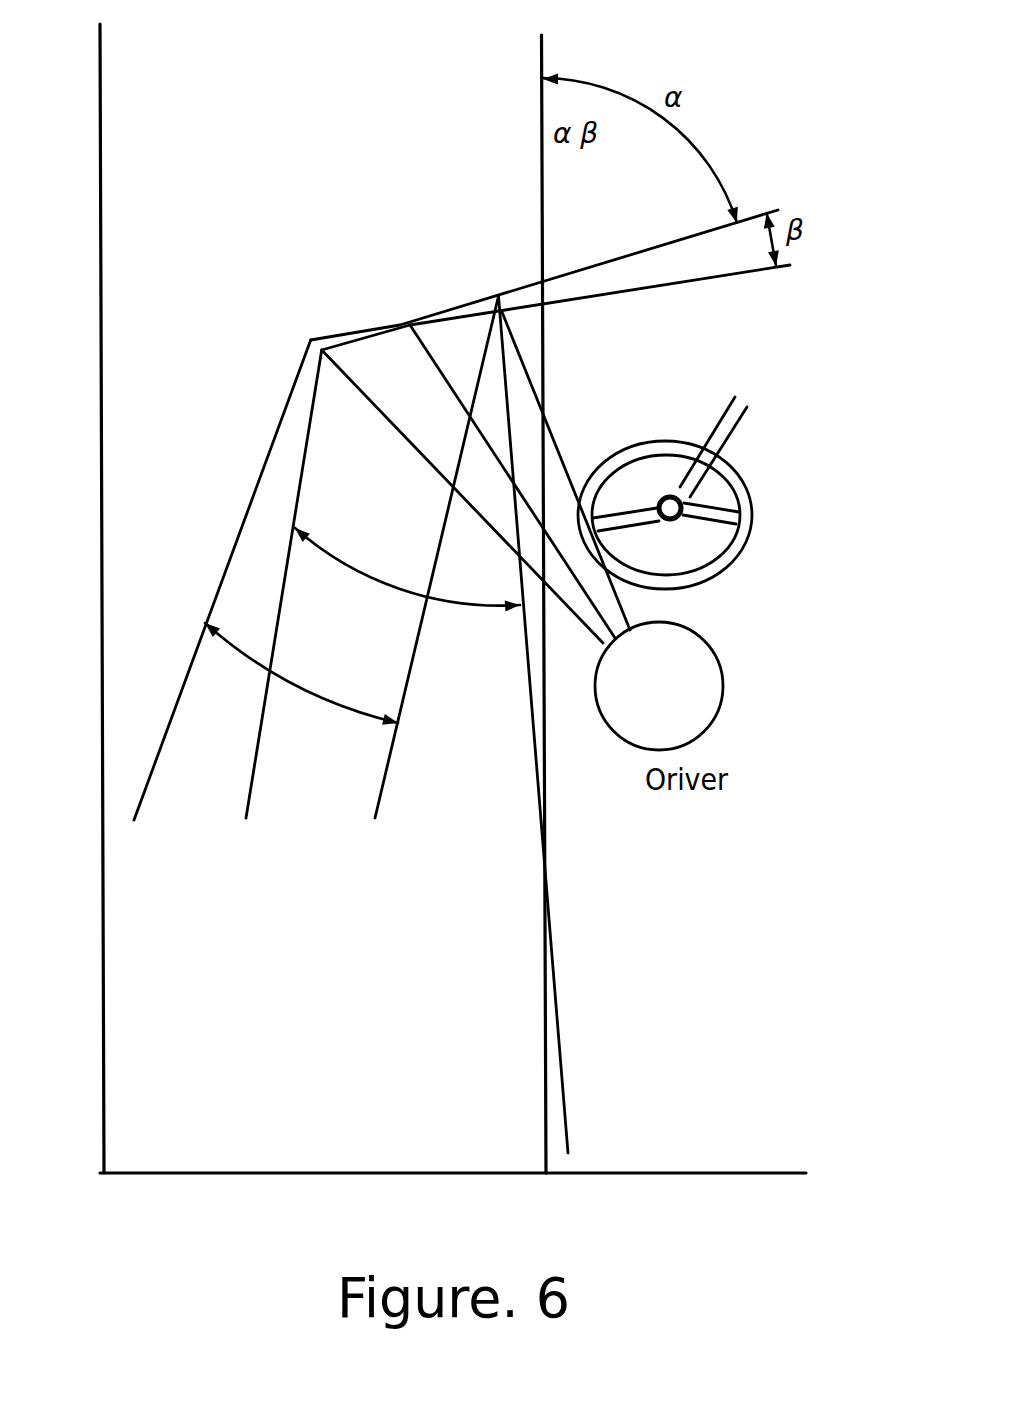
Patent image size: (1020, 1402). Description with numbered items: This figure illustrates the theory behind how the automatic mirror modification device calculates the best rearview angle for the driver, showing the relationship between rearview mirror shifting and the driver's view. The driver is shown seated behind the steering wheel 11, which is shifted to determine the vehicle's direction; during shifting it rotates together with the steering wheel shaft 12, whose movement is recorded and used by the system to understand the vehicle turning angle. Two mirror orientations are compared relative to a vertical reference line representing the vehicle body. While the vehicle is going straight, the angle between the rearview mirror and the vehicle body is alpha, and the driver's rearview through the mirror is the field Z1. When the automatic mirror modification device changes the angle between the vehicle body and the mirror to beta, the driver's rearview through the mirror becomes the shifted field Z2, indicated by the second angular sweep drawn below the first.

The steering wheel 11 is at (747, 503).
The steering wheel shaft 12 is at (722, 422).
The driver's rearview through the mirror Z1 is at (407, 569).
The driver's rearview through the mirror Z2 is at (301, 674).